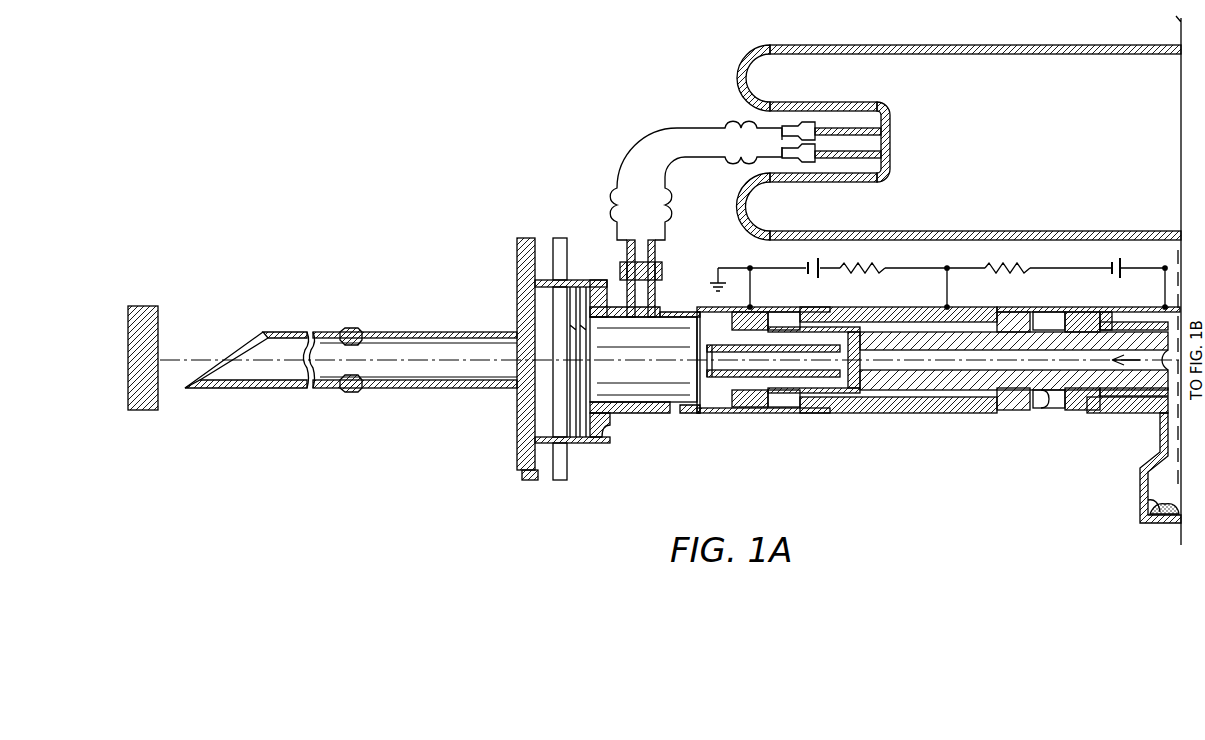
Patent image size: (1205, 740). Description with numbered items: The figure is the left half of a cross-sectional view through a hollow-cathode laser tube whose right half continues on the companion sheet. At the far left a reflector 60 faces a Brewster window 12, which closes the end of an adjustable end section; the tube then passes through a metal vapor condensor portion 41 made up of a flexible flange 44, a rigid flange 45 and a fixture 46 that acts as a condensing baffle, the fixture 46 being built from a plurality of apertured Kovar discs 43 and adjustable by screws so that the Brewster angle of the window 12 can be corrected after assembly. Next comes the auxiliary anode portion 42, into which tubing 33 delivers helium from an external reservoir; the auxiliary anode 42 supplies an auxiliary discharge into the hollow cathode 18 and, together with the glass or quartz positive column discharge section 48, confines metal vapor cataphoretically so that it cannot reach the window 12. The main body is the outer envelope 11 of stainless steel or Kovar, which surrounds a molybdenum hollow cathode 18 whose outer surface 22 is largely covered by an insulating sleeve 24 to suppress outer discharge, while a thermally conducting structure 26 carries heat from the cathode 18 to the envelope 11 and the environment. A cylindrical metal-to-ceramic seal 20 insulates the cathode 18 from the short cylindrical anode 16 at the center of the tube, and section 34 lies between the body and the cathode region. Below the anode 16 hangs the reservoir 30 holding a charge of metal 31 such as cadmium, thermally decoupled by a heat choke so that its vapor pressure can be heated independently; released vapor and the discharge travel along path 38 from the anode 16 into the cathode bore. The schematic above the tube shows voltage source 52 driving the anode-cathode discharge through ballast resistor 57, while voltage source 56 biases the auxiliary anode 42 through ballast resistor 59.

The outer envelope 11 is at (876, 413).
The Brewster window 12 is at (242, 350).
The anode 16 is at (1160, 308).
The hollow cathode 18 is at (1005, 318).
The metal-to-ceramic seal 20 is at (755, 318).
The outer surface 22 is at (1050, 408).
The insulating sleeve 24 is at (890, 332).
The structure 26 is at (1015, 395).
The reservoir 30 is at (1148, 519).
The metal 31 is at (1009, 46).
The tubing 33 is at (668, 127).
The thin-walled tube 34 is at (830, 413).
The vapor flow path 38 is at (1138, 366).
The metal vapor condensor portion 41 is at (572, 377).
The auxiliary anode portion 42 is at (646, 413).
The apertured Kovar disc 43 is at (582, 285).
The flexible flange 44 is at (517, 427).
The rigid flange 45 is at (573, 495).
The fixture 46 is at (604, 443).
The positive column discharge section 48 is at (710, 380).
The voltage source 52 is at (1113, 267).
The voltage source 56 is at (804, 264).
The ballast resistor 57 is at (1028, 268).
The ballast resistor 59 is at (886, 268).
The reflector 60 is at (158, 400).